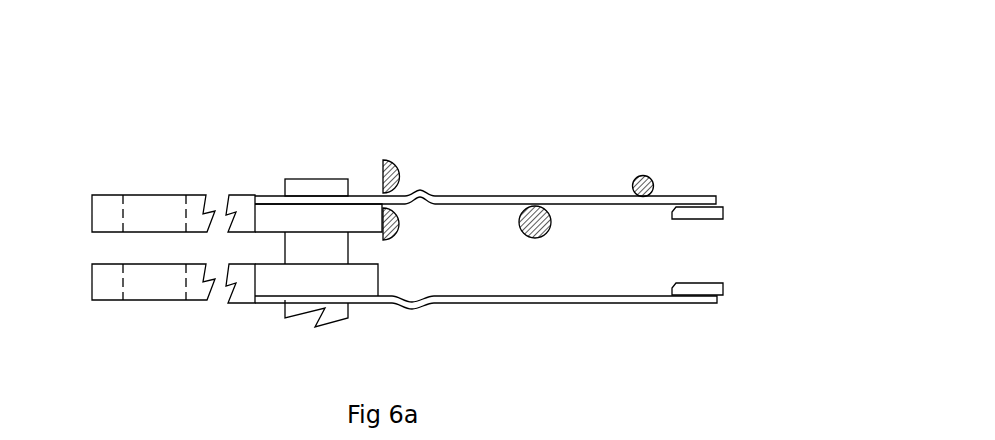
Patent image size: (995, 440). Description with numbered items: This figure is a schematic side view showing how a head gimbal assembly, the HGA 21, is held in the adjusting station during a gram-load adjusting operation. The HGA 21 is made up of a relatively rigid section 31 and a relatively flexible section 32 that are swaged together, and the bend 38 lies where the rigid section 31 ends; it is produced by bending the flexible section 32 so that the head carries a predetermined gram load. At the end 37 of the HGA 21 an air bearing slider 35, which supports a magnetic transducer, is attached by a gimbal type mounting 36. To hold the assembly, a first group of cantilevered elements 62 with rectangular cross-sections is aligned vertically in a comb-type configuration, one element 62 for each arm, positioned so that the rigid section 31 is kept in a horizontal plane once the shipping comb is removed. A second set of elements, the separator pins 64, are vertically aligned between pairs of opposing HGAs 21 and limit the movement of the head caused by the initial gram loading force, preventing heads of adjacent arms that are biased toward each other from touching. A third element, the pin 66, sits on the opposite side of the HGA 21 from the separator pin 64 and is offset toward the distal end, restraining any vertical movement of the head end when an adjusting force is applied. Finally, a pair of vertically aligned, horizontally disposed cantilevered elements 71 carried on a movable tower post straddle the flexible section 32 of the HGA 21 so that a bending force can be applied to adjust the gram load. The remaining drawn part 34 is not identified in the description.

The HGA 21 is at (391, 374).
The relatively rigid section 31 is at (303, 220).
The relatively flexible section 32 is at (563, 197).
The pipe section 34 is at (145, 195).
The air bearing slider 35 is at (716, 218).
The gimbal type mounting 36 is at (723, 207).
The end of the HGA 37 is at (685, 197).
The bend 38 is at (418, 190).
The cantilevered element 62 is at (313, 179).
The separator pin 64 is at (522, 236).
The pin 66 is at (645, 176).
The cantilevered element 71 is at (392, 159).